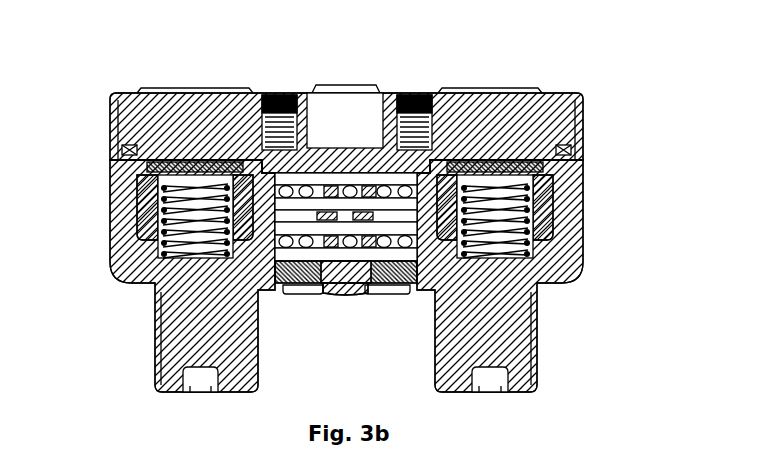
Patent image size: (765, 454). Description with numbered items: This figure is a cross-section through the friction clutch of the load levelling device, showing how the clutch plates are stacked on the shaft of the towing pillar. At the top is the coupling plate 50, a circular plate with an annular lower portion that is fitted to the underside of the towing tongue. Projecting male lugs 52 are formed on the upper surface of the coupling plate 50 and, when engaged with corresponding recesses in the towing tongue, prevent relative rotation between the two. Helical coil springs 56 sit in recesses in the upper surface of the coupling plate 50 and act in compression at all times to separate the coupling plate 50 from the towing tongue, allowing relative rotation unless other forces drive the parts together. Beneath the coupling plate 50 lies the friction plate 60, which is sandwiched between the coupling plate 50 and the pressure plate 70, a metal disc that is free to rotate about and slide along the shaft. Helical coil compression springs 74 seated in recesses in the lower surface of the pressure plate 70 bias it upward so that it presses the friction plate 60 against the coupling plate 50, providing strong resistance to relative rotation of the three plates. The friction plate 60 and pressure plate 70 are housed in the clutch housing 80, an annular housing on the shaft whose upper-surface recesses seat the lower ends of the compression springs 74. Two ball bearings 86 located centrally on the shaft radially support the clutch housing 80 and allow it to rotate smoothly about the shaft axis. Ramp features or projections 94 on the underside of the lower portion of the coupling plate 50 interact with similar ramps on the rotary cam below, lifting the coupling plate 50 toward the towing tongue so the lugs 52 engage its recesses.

The coupling plate 50 is at (165, 127).
The projecting male lugs 52 is at (192, 88).
The helical coil springs 56 is at (411, 93).
The friction plate 60 is at (553, 93).
The pressure plate 70 is at (148, 200).
The helical coil compression spring 74 is at (165, 253).
The clutch housing 80 is at (235, 393).
The ball bearings 86 is at (373, 205).
The ramp features or projections 94 is at (388, 294).